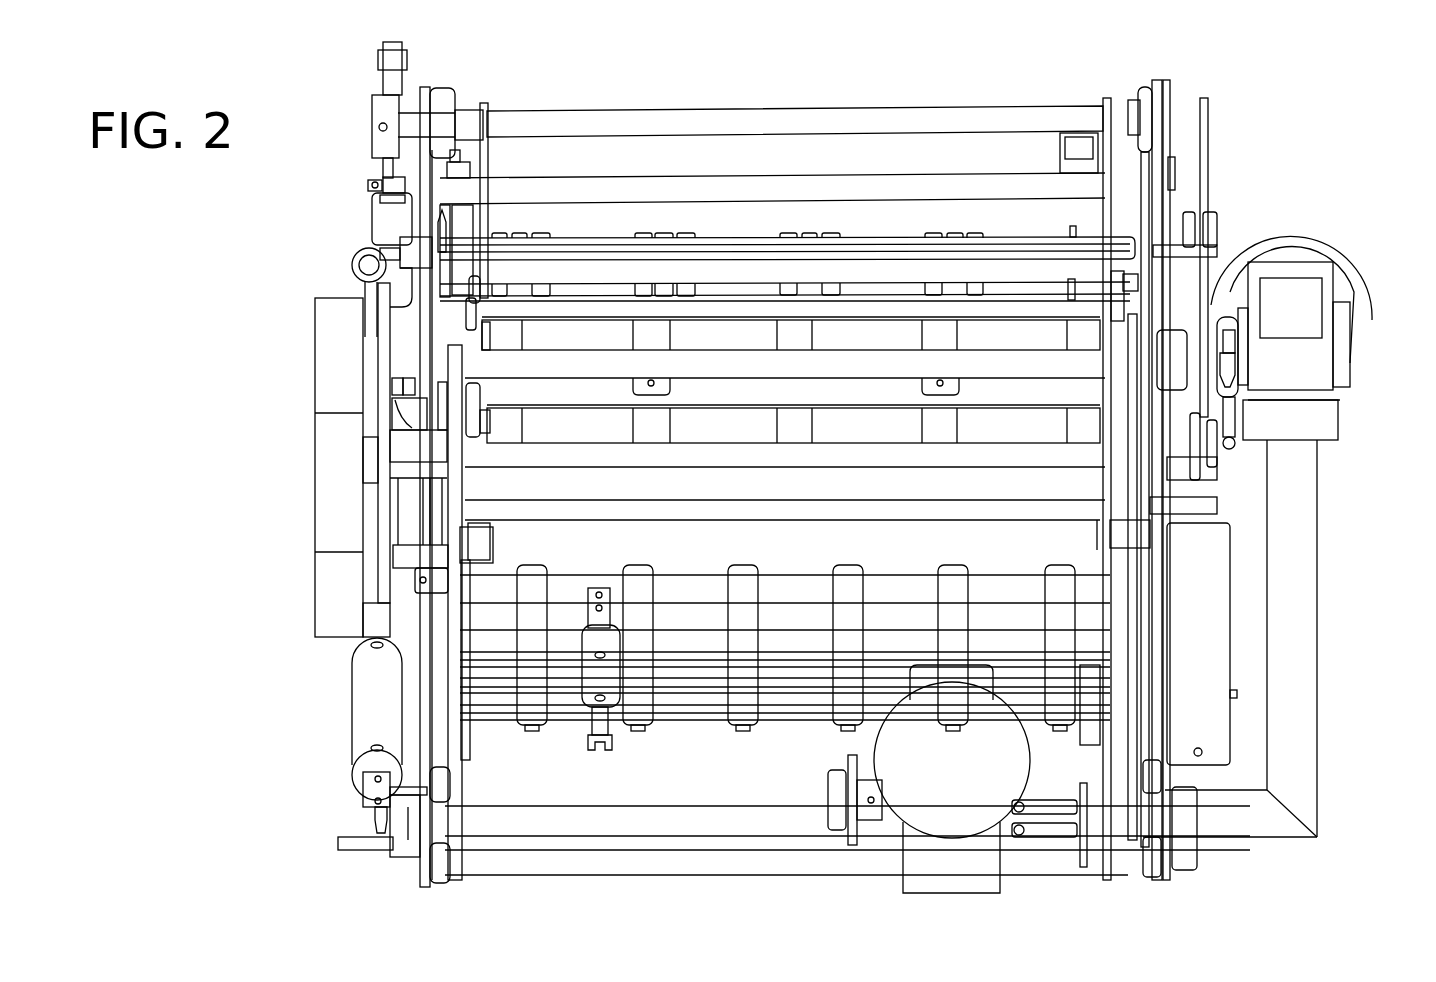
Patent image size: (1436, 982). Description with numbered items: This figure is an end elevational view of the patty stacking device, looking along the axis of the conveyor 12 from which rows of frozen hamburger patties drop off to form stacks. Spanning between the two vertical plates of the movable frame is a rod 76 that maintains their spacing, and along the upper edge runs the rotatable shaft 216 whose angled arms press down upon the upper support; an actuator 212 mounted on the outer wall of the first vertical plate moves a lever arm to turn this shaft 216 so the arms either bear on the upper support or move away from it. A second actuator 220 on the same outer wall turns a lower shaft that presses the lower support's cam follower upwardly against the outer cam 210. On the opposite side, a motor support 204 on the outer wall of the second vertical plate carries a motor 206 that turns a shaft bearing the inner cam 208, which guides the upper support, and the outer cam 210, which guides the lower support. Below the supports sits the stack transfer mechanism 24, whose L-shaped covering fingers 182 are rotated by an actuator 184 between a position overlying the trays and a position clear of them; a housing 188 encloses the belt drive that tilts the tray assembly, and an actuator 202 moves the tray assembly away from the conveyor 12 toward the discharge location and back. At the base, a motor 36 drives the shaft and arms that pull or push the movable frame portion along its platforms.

The conveyor 12 is at (1018, 245).
The stack transfer mechanism 24 is at (695, 740).
The motor 36 is at (972, 772).
The rod 76 is at (805, 188).
The L-shaped covering fingers 182 is at (743, 573).
The actuator 184 is at (597, 668).
The housing 188 is at (317, 578).
The actuator 202 is at (1205, 668).
The motor support 204 is at (1290, 533).
The motor 206 is at (1298, 227).
The inner cam 208 is at (1186, 212).
The outer cam 210 is at (1207, 113).
The actuator 212 is at (388, 228).
The rotatable shaft 216 is at (643, 123).
The actuator 220 is at (375, 700).